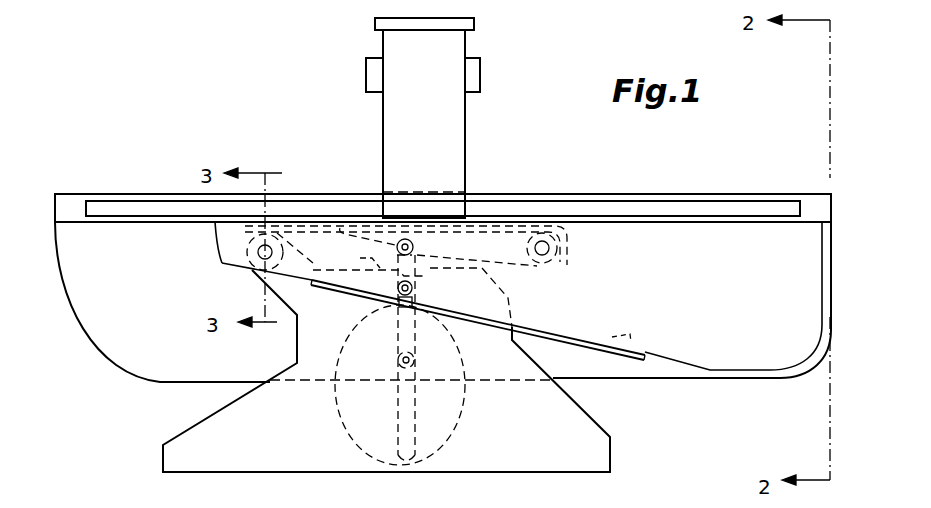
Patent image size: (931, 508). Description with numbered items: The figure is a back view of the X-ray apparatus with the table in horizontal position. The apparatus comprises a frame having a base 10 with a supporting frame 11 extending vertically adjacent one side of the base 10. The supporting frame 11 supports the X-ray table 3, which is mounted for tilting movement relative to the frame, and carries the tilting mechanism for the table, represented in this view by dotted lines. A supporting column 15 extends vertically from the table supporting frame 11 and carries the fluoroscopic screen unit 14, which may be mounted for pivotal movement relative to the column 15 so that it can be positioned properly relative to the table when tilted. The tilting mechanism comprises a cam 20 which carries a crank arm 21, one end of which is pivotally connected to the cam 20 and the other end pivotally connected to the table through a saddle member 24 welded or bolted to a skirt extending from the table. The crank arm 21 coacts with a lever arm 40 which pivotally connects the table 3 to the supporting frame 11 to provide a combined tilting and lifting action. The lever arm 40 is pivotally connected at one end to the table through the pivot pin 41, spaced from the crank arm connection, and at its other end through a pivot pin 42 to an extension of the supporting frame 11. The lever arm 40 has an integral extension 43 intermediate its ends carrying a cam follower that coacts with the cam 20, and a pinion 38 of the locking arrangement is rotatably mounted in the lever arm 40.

The X-ray table 3 is at (718, 192).
The base 10 is at (585, 348).
The supporting frame 11 is at (597, 421).
The fluoroscopic screen unit 14 is at (482, 72).
The supporting column 15 is at (467, 156).
The cam 20 is at (345, 426).
The crank arm 21 is at (418, 337).
The saddle member 24 is at (570, 251).
The pinion 38 is at (416, 250).
The lever arm 40 is at (360, 264).
The pivot pin 41 is at (540, 260).
The pivot pin 42 is at (248, 260).
The integral extension 43 is at (420, 278).